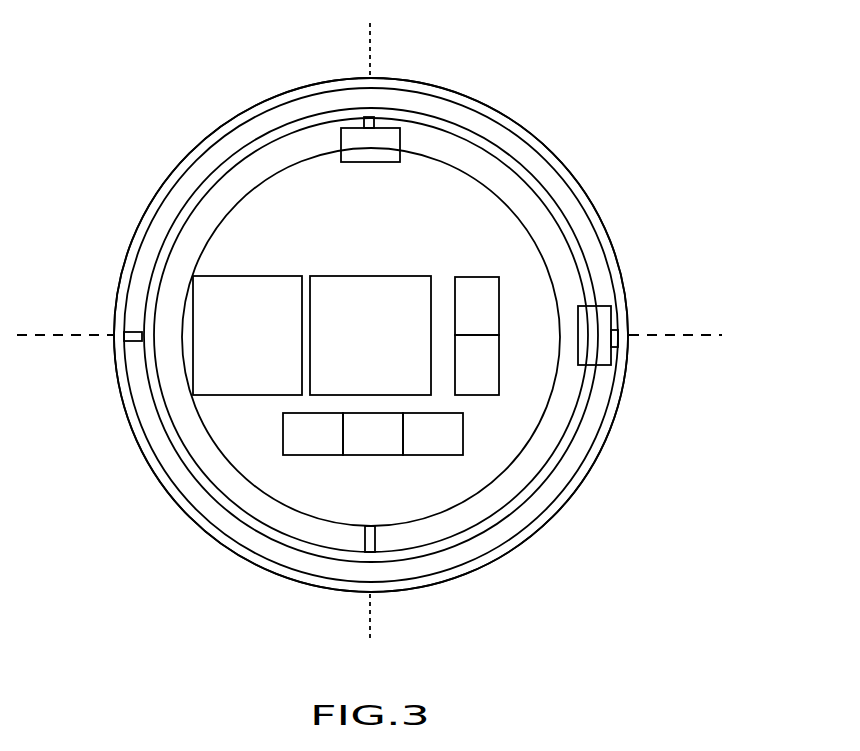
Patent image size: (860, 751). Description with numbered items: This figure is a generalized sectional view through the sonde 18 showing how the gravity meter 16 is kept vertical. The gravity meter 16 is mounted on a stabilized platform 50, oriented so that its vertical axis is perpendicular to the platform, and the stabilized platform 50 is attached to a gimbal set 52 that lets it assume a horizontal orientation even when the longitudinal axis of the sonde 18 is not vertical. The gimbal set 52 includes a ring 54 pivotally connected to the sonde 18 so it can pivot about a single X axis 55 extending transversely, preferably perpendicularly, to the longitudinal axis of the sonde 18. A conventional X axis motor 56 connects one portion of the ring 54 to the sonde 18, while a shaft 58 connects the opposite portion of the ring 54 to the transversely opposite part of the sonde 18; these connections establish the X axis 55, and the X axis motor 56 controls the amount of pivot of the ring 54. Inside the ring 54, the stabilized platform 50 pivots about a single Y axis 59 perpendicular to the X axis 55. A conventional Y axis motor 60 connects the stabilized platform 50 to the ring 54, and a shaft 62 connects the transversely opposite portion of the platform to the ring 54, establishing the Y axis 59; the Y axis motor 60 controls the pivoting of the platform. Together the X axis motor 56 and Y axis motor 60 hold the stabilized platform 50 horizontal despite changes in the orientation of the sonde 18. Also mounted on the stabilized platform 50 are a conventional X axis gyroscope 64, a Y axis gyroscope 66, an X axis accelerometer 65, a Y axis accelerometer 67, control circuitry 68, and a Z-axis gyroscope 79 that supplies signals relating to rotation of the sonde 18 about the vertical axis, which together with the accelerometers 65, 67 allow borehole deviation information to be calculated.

The gravity meter 16 is at (357, 380).
The sonde 18 is at (545, 141).
The stabilized platform 50 is at (357, 230).
The gimbal set 52 is at (102, 407).
The ring 54 is at (207, 170).
The X axis 55 is at (63, 333).
The X axis motor 56 is at (600, 365).
The shaft 58 is at (133, 331).
The Y axis 59 is at (373, 58).
The Y axis motor 60 is at (350, 127).
The shaft 62 is at (375, 540).
The X axis gyroscope 64 is at (292, 457).
The X axis accelerometer 65 is at (483, 277).
The Y axis gyroscope 66 is at (380, 458).
The Y axis accelerometer 67 is at (499, 345).
The control circuitry 68 is at (234, 380).
The Z-axis gyroscope 79 is at (437, 457).